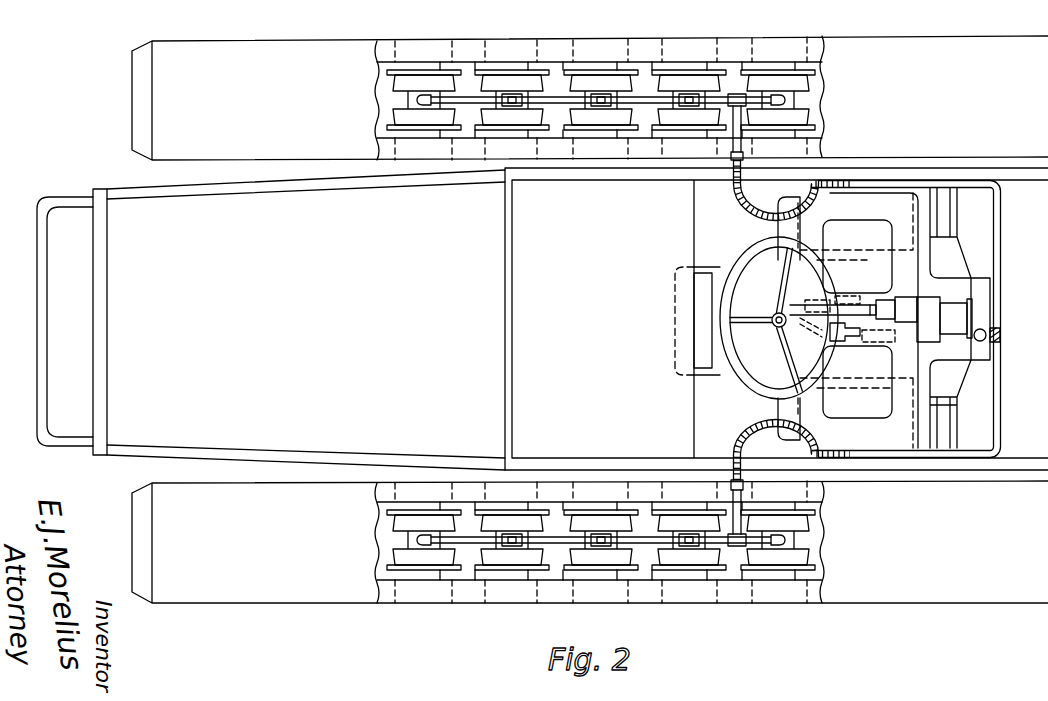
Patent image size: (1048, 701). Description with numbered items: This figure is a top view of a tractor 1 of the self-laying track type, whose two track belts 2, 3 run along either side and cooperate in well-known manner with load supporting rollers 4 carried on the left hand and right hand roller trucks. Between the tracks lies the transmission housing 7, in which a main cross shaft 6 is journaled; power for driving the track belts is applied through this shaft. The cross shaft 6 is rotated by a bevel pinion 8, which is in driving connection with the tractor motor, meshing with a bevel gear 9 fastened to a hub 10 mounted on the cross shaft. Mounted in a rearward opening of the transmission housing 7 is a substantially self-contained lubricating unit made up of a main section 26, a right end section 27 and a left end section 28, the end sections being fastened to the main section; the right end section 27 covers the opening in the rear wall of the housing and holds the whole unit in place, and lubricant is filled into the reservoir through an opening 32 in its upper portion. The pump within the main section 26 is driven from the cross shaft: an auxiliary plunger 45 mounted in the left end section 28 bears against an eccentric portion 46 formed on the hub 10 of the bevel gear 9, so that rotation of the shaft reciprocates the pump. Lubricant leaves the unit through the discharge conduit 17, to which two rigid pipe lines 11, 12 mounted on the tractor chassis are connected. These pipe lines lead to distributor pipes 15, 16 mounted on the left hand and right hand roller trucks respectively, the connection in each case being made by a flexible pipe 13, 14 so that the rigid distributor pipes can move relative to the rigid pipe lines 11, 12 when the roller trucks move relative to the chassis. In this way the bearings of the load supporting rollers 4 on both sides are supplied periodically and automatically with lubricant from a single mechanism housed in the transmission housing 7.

The tractor 1 is at (585, 272).
The track belt 2 is at (993, 598).
The track belt 3 is at (1000, 38).
The load supporting rollers 4 is at (406, 119).
The main cross shaft 6 is at (870, 374).
The transmission housing 7 is at (928, 427).
The bevel pinion 8 is at (808, 304).
The bevel gear 9 is at (894, 340).
The hub 10 is at (830, 337).
The rigid pipe line 11 is at (1000, 409).
The rigid pipe line 12 is at (1002, 272).
The flexible pipe 13 is at (747, 434).
The flexible pipe 14 is at (743, 203).
The distributor pipe 15 is at (640, 542).
The distributor pipe 16 is at (633, 99).
The discharge conduit 17 is at (1002, 324).
The main section 26 is at (935, 338).
The right end section 27 is at (978, 278).
The left end section 28 is at (887, 300).
The opening 32 is at (997, 351).
The auxiliary plunger 45 is at (873, 300).
The eccentric portion 46 is at (846, 311).